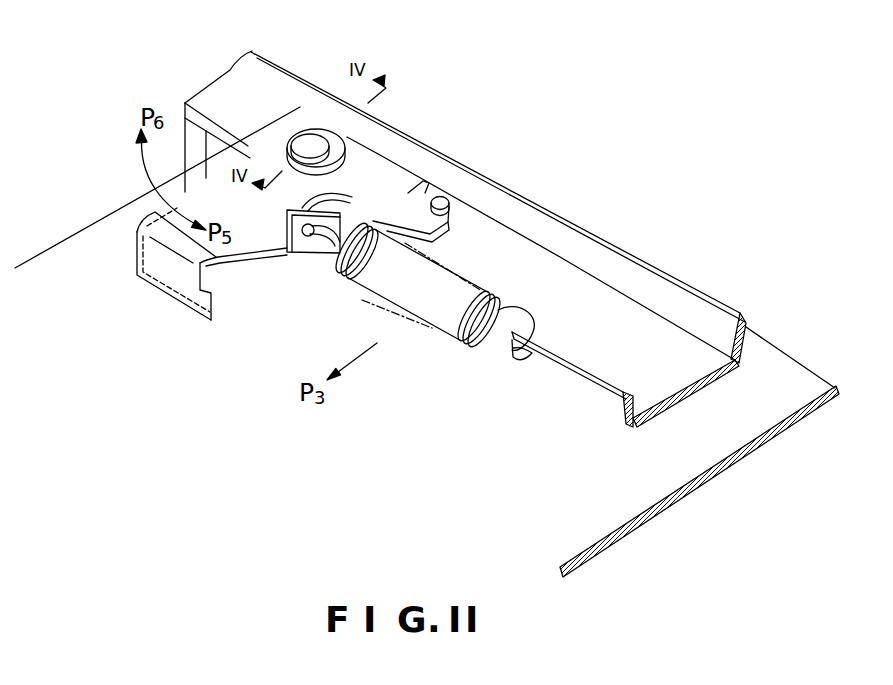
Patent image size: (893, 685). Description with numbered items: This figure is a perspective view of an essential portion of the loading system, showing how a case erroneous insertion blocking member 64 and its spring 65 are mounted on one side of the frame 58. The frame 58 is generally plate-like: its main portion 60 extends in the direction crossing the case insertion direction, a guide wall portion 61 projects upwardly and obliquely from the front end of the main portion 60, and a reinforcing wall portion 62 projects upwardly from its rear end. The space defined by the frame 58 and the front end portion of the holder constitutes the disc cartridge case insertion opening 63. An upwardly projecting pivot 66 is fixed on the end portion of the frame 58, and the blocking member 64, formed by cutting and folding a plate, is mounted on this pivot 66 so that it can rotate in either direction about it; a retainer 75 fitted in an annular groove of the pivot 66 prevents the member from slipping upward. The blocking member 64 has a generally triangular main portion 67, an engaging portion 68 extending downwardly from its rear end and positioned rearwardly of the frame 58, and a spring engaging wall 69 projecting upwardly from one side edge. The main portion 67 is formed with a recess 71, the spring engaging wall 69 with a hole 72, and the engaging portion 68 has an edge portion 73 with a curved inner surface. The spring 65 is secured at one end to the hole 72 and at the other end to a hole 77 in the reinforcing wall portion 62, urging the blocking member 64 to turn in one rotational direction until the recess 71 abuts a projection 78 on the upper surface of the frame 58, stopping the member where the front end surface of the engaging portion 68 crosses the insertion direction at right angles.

The frame 58 is at (630, 317).
The main portion 60 is at (678, 395).
The guide wall portion 61 is at (723, 311).
The reinforcing wall portion 62 is at (606, 386).
The disc cartridge case insertion opening 63 is at (727, 382).
The case erroneous insertion blocking member 64 is at (358, 162).
The spring 65 is at (410, 317).
The pivot 66 is at (304, 140).
The main portion 67 is at (262, 240).
The engaging portion 68 is at (165, 273).
The spring engaging wall 69 is at (304, 200).
The recess 71 is at (440, 198).
The hole 72 is at (309, 238).
The edge portion 73 is at (218, 294).
The retainer 75 is at (320, 128).
The hole 77 is at (524, 367).
The projection 78 is at (427, 200).